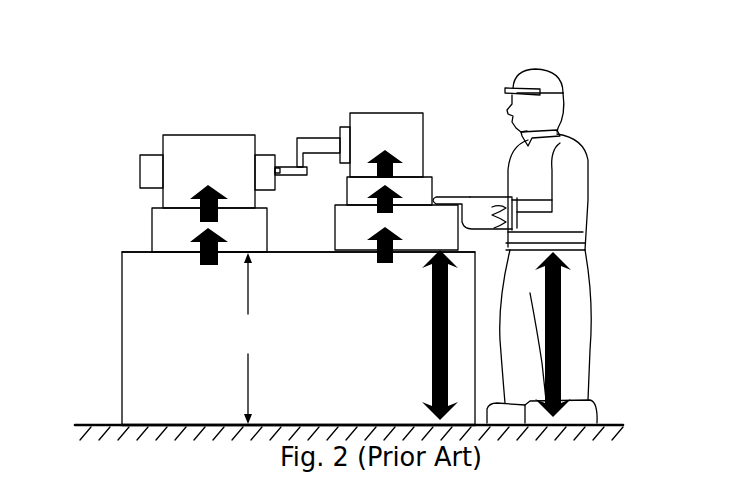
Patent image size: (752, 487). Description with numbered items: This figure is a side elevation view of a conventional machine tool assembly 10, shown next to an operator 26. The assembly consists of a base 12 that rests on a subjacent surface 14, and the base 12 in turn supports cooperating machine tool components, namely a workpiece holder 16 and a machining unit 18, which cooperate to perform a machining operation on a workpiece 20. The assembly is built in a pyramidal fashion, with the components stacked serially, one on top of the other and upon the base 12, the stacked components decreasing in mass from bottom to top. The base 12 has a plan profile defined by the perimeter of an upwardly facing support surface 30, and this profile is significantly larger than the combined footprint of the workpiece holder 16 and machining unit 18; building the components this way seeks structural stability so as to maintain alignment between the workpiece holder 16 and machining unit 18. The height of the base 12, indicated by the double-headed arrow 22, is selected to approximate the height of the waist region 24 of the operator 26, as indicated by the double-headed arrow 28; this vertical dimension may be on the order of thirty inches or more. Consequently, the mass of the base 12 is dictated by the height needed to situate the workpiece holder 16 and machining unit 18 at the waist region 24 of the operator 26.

The machine tool assembly 10 is at (310, 216).
The base 12 is at (147, 335).
The subjacent surface 14 is at (113, 423).
The workpiece holder 16 is at (200, 123).
The machining unit 18 is at (393, 101).
The workpiece 20 is at (283, 165).
The double-headed arrow 22 is at (430, 323).
The waist region 24 is at (590, 245).
The operator 26 is at (583, 135).
The double-headed arrow 28 is at (562, 343).
The upwardly facing support surface 30 is at (136, 252).